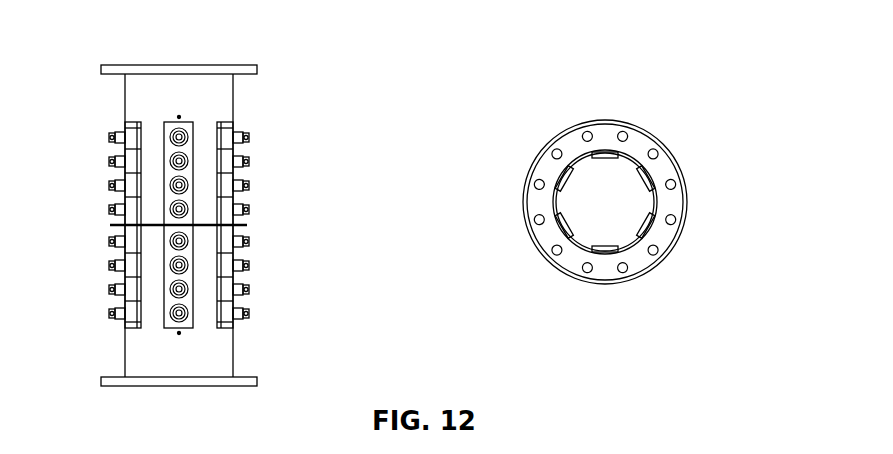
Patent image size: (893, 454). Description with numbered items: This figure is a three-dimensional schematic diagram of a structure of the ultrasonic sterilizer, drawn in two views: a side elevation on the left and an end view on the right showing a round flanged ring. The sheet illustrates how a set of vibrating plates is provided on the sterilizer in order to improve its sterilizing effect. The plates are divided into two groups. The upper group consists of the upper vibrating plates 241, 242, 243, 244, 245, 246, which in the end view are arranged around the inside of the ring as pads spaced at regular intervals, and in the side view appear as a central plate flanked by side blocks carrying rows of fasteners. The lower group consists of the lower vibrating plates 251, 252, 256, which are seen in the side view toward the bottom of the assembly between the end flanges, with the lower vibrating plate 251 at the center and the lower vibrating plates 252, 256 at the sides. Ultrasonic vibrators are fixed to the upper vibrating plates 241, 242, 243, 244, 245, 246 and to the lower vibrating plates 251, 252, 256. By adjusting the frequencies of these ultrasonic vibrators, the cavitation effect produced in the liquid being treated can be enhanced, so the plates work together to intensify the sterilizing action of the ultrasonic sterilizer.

The upper vibrating plate 241 is at (193, 125).
The upper vibrating plate 242 is at (133, 130).
The upper vibrating plate 243 is at (560, 175).
The upper vibrating plate 244 is at (605, 152).
The upper vibrating plate 245 is at (643, 180).
The upper vibrating plate 246 is at (242, 185).
The lower vibrating plate 251 is at (190, 327).
The lower vibrating plate 252 is at (137, 323).
The lower vibrating plate 256 is at (243, 288).